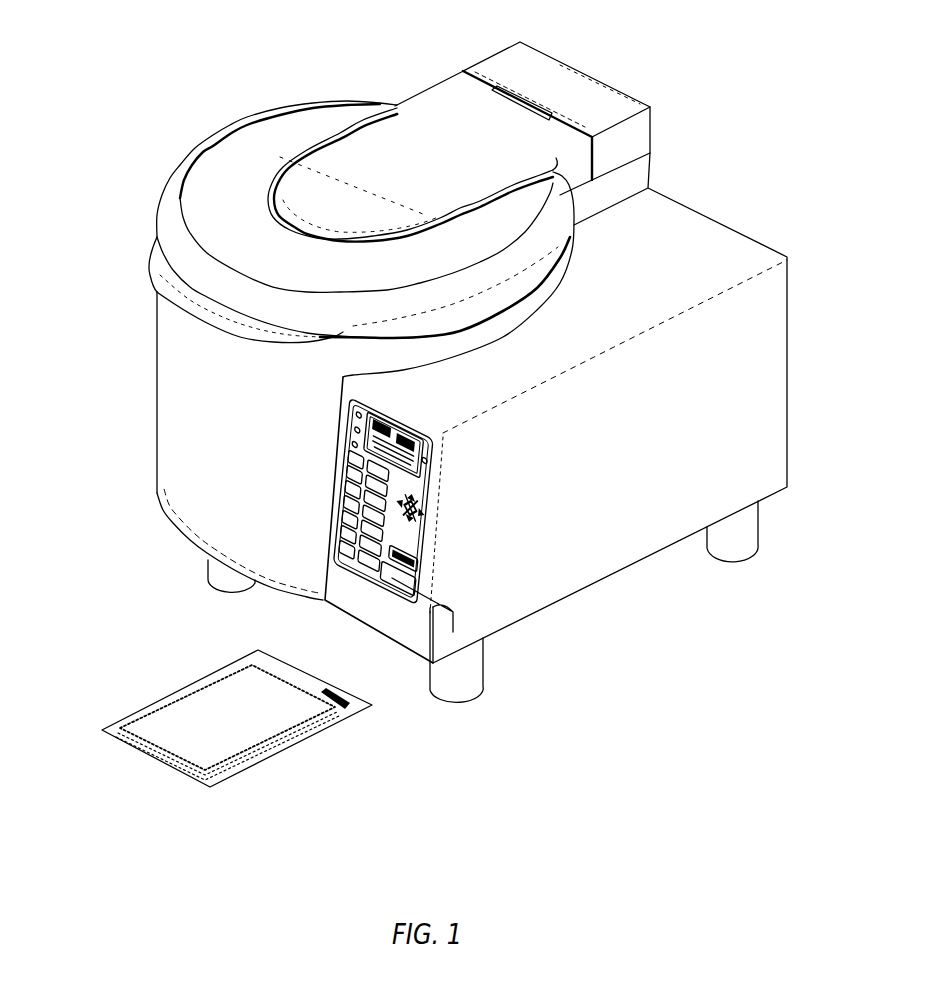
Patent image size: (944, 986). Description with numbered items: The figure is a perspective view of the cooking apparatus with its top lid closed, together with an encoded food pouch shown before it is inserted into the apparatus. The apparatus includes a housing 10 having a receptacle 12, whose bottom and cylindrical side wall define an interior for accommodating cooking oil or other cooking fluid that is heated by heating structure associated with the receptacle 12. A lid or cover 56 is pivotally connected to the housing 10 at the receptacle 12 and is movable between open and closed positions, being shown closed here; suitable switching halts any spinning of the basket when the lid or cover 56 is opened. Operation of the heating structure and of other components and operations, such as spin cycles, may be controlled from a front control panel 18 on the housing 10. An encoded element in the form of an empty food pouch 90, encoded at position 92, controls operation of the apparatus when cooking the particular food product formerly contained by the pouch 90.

The housing 10 is at (692, 265).
The receptacle 12 is at (540, 307).
The lid or cover 56 is at (257, 162).
The front control panel 18 is at (421, 490).
The food pouch 90 is at (223, 740).
The encoded position 92 is at (350, 708).